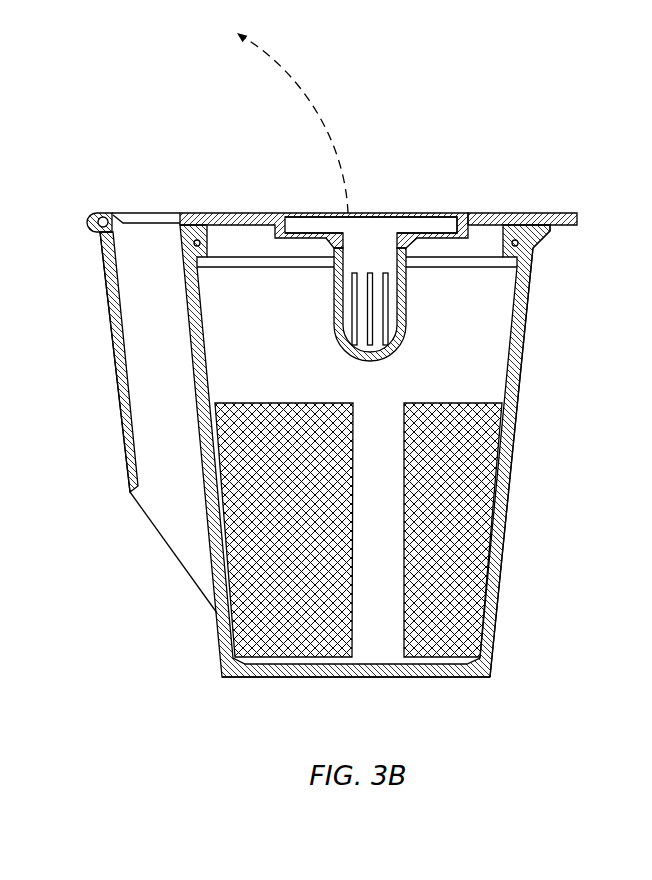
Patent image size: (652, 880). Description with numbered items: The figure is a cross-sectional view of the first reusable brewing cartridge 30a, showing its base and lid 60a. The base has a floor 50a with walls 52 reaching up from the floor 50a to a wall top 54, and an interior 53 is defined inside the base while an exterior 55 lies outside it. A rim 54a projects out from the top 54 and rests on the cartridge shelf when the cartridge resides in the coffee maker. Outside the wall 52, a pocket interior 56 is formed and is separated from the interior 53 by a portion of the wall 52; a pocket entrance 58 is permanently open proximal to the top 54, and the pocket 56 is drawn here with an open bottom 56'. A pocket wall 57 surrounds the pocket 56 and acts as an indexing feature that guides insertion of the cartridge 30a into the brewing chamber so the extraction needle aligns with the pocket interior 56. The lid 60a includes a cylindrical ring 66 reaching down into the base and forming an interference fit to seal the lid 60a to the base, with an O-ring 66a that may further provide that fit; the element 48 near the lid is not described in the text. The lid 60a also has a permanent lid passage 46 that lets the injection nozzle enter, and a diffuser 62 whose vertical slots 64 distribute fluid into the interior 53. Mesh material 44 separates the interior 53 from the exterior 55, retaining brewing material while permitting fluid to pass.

The first reusable brewing cartridge 30a is at (256, 137).
The mesh material 44 is at (297, 638).
The permanent lid passage 46 is at (380, 248).
The hinge pin 48 is at (101, 213).
The floor 50a is at (270, 668).
The walls 52 is at (518, 368).
The interior 53 is at (240, 315).
The wall top 54 is at (533, 262).
The rim 54a is at (548, 232).
The exterior 55 is at (535, 535).
The pocket interior 56 is at (130, 362).
The open bottom 56' is at (173, 573).
The pocket wall 57 is at (114, 350).
The pocket entrance 58 is at (147, 223).
The lid 60a is at (490, 213).
The diffuser 62 is at (340, 333).
The vertical slots 64 is at (372, 315).
The cylindrical ring 66 is at (200, 243).
The O-ring 66a is at (203, 213).